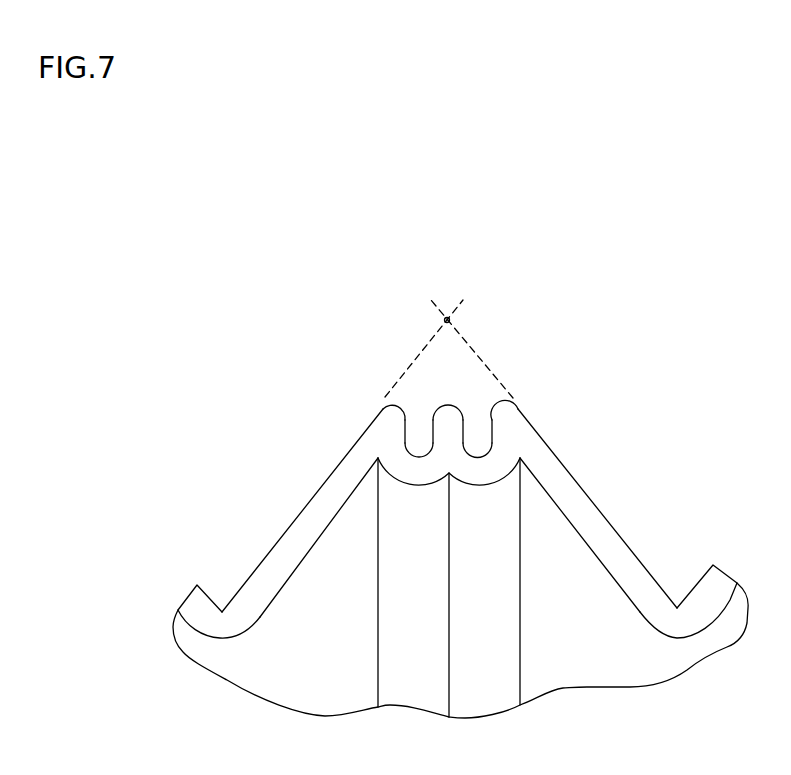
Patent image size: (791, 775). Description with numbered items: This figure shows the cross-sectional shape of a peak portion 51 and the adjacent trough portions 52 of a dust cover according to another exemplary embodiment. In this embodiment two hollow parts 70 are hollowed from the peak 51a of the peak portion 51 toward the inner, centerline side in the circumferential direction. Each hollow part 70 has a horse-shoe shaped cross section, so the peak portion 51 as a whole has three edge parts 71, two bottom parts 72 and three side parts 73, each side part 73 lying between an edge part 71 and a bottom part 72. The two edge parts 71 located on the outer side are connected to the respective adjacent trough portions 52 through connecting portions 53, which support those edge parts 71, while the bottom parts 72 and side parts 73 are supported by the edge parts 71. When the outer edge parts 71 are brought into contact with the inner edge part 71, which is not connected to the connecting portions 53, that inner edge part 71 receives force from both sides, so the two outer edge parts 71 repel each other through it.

The peak portion 51 is at (514, 326).
The peak 51a is at (447, 316).
The trough portion 52 is at (219, 572).
The connecting portion 53 is at (309, 503).
The hollow part 70 is at (417, 400).
The edge part 71 is at (384, 408).
The bottom part 72 is at (400, 487).
The side part 73 is at (404, 428).